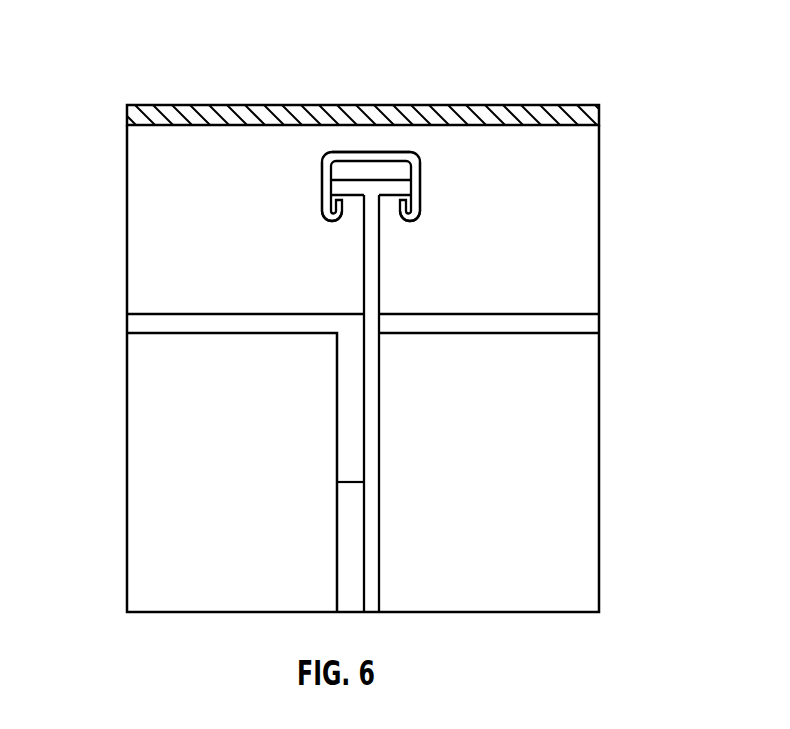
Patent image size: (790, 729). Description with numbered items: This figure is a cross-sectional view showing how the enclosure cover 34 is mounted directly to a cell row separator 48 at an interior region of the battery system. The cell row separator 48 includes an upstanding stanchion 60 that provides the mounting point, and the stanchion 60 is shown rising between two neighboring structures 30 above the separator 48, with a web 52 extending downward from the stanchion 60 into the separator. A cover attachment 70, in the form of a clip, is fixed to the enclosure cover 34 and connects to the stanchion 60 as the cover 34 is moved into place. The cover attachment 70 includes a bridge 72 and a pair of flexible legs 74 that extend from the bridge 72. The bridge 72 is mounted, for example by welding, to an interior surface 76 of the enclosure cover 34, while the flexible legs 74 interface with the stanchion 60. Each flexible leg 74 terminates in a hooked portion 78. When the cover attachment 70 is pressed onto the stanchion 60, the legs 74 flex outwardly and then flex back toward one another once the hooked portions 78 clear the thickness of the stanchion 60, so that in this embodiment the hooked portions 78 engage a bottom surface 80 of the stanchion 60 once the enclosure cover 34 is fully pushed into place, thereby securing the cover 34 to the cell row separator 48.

The panel 30 is at (119, 425).
The enclosure cover 34 is at (527, 113).
The cell row separator 48 is at (403, 396).
The web of post 52 is at (380, 301).
The stanchion 60 is at (372, 185).
The cover attachment 70 is at (362, 147).
The bridge 72 is at (357, 148).
The flexible legs 74 is at (322, 196).
The interior surface 76 is at (395, 137).
The hooked portion 78 is at (333, 222).
The bottom surface 80 is at (380, 198).